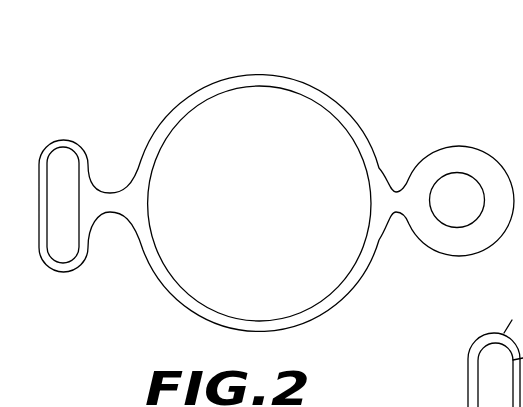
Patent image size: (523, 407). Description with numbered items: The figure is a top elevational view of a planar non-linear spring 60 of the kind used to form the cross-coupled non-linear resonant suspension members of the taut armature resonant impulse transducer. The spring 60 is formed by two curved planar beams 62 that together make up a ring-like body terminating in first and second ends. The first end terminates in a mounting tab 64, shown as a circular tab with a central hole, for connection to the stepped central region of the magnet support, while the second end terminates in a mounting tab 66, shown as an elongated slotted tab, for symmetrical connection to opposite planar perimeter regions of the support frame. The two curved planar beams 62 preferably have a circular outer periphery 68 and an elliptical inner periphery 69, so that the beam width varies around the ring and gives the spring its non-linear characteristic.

The planar non-linear spring 60 is at (288, 40).
The curved planar beams 62 is at (287, 88).
The mounting tab 64 is at (487, 152).
The mounting tab 66 is at (62, 137).
The circular outer periphery 68 is at (168, 292).
The elliptical inner periphery 69 is at (313, 305).